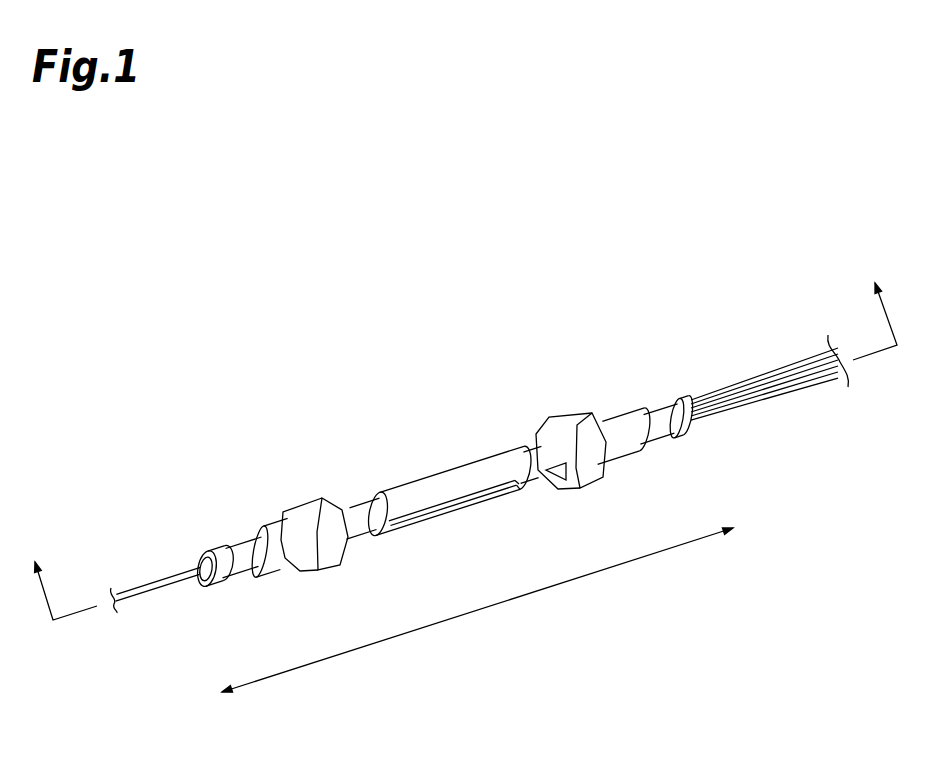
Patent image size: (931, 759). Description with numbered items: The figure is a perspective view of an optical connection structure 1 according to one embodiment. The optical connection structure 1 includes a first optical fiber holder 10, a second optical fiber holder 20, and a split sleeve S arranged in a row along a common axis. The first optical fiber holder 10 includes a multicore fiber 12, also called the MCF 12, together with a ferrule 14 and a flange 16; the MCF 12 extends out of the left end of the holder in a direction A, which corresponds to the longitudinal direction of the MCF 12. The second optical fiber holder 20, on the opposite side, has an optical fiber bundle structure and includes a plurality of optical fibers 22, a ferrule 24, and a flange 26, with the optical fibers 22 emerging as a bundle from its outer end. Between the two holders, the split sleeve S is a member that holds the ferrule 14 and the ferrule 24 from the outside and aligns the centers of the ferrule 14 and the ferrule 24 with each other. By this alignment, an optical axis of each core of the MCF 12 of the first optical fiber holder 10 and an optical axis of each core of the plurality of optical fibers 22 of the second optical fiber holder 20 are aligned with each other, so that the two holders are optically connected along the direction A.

The optical connection structure 1 is at (341, 355).
The first optical fiber holder 10 is at (274, 496).
The multicore fiber 12 is at (156, 579).
The ferrule 14 is at (353, 500).
The flange 16 is at (294, 500).
The second optical fiber holder 20 is at (615, 391).
The optical fibers 22 is at (750, 377).
The ferrule 24 is at (522, 447).
The flange 26 is at (567, 415).
The split sleeve S is at (441, 470).
The direction A is at (522, 598).